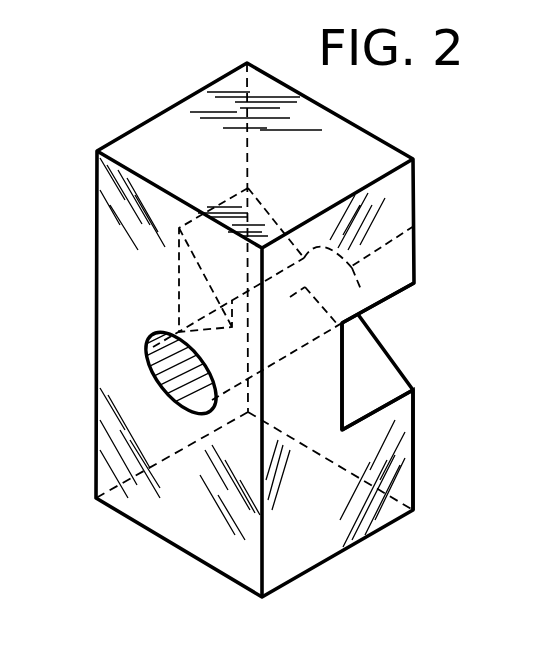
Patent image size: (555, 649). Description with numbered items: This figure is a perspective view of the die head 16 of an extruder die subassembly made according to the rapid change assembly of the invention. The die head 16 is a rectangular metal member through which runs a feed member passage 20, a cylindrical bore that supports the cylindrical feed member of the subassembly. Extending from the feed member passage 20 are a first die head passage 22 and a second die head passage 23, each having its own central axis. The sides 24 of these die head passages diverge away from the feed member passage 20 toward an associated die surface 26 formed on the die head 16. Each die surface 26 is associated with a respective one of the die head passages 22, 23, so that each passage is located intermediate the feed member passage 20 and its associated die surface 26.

The die head 16 is at (170, 138).
The feed member passage 20 is at (157, 382).
The second die head passage 23 is at (200, 297).
The first die head passage 22 is at (363, 357).
The sides of the die head passages 24 is at (372, 352).
The die surface 26 is at (392, 442).